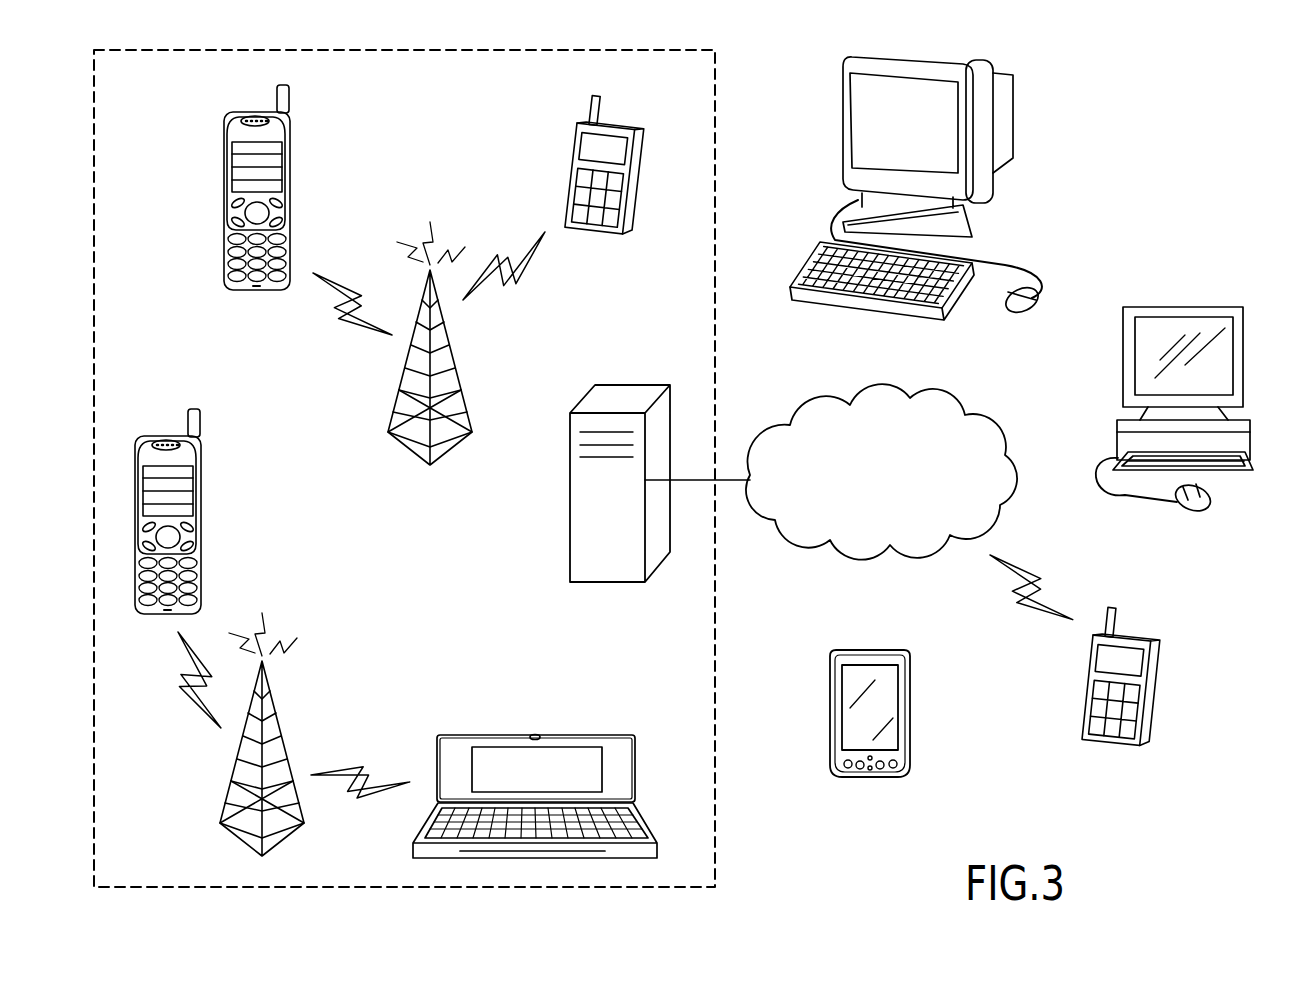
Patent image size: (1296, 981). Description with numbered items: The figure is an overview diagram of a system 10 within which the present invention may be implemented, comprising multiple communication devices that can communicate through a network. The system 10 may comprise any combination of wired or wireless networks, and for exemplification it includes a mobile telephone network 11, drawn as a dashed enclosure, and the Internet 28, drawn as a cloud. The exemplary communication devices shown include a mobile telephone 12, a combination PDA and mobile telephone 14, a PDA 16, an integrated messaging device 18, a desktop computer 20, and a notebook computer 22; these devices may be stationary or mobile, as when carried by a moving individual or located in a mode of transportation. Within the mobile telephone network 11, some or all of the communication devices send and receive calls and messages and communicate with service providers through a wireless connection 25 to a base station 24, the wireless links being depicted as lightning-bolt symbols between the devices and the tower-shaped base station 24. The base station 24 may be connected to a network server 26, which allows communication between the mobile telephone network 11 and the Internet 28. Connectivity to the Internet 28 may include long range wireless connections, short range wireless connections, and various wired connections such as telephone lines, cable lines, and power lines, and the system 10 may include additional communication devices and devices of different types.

The system 10 is at (1230, 589).
The mobile telephone network 11 is at (140, 97).
The mobile telephone 12 is at (292, 200).
The combination PDA and mobile telephone 14 is at (538, 737).
The PDA 16 is at (912, 708).
The integrated messaging device 18 is at (574, 172).
The desktop computer 20 is at (1013, 113).
The notebook computer 22 is at (1183, 307).
The base station 24 is at (452, 348).
The wireless connection 25 is at (200, 708).
The network server 26 is at (570, 498).
The Internet 28 is at (920, 400).